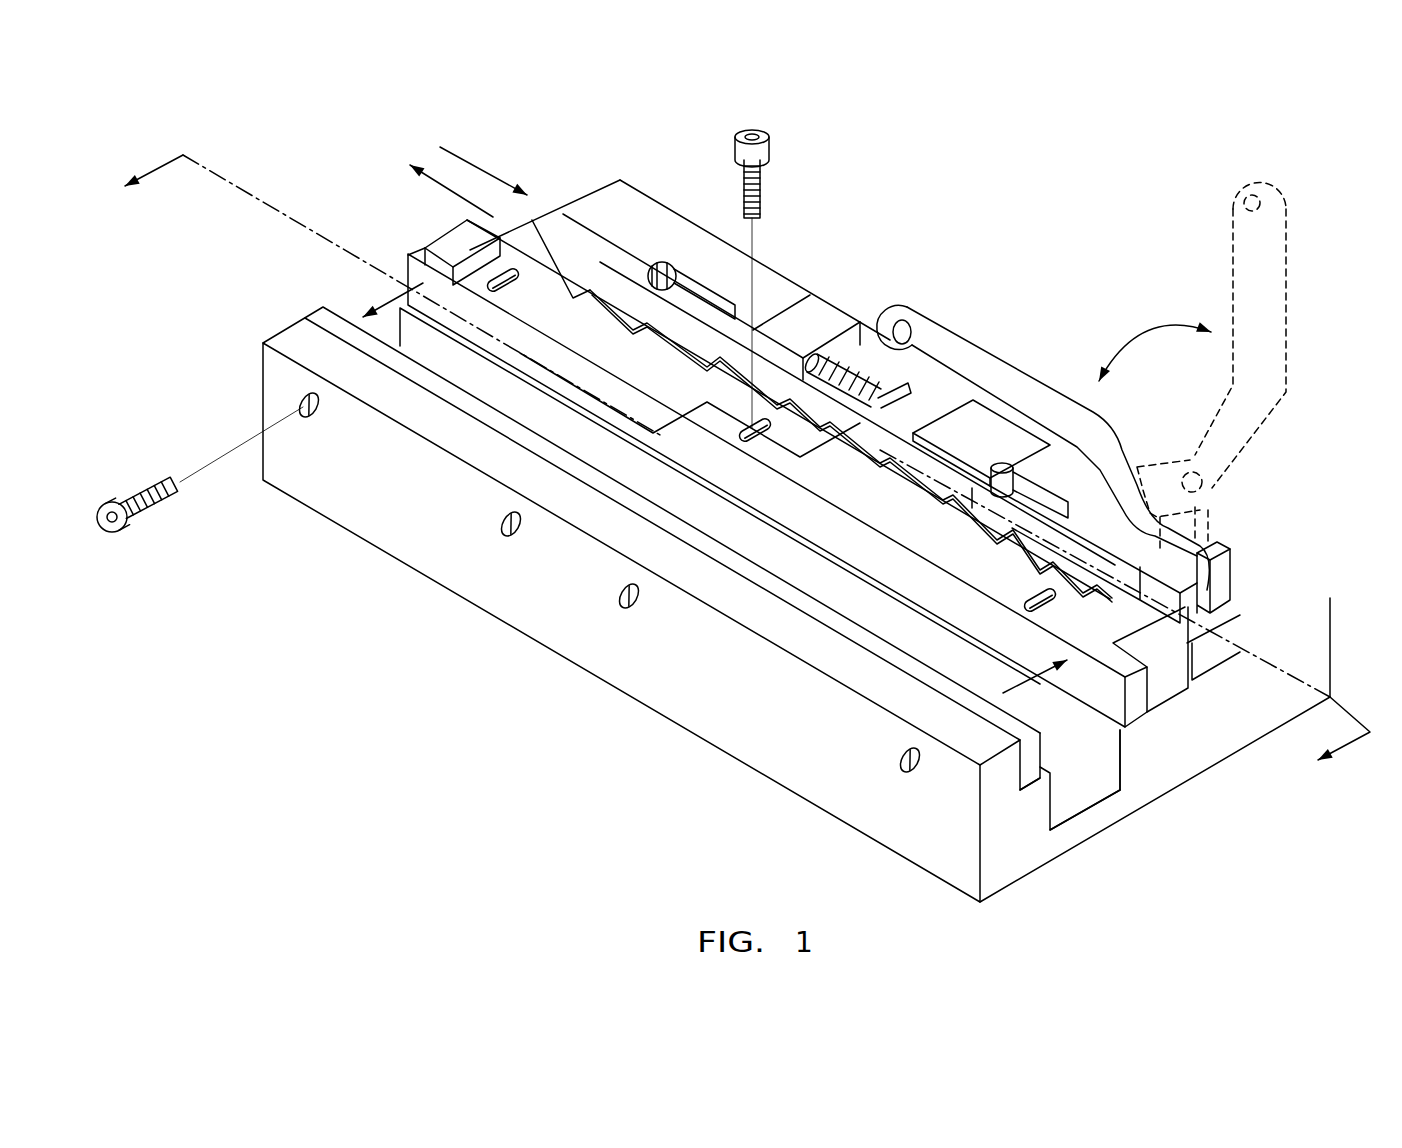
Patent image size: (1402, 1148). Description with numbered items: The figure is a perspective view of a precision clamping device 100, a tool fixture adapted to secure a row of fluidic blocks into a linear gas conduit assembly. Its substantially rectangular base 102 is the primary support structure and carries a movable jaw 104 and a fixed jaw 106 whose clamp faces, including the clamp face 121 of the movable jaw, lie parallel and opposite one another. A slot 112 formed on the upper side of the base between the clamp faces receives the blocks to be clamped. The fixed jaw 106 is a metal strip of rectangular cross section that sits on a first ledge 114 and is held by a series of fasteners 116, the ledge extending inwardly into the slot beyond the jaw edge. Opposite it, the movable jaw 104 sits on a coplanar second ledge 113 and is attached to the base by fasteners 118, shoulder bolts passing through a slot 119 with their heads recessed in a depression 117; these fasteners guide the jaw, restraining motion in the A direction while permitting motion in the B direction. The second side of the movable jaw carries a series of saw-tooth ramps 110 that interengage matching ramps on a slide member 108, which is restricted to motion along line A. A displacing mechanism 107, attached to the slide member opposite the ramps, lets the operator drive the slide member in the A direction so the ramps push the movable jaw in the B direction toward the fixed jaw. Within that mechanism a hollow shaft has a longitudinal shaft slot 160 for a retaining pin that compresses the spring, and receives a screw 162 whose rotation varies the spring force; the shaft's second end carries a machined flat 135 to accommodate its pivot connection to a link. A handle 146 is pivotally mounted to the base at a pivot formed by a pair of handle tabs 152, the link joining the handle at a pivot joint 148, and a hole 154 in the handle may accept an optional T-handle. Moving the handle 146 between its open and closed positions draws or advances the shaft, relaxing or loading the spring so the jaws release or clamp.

The clamping device 100 is at (1115, 186).
The base 102 is at (637, 193).
The movable jaw 104 is at (408, 252).
The fixed jaw 106 is at (323, 307).
The displacing mechanism 107 is at (820, 270).
The slide member 108 is at (543, 243).
The ramps 110 is at (603, 288).
The slot 112 is at (1075, 822).
The second ledge 113 is at (1118, 740).
The first ledge 114 is at (1057, 813).
The fasteners 116 is at (148, 484).
The depression 117 is at (1045, 608).
The fasteners 118 is at (770, 180).
The slot 119 is at (1032, 597).
The clamp face 121 is at (410, 266).
The machined flat 135 is at (1020, 447).
The handle 146 is at (963, 345).
The pivot joint 148 is at (1213, 502).
The handle tabs 152 is at (1226, 582).
The hole 154 is at (905, 320).
The shaft slot 160 is at (885, 405).
The screw 162 is at (660, 262).